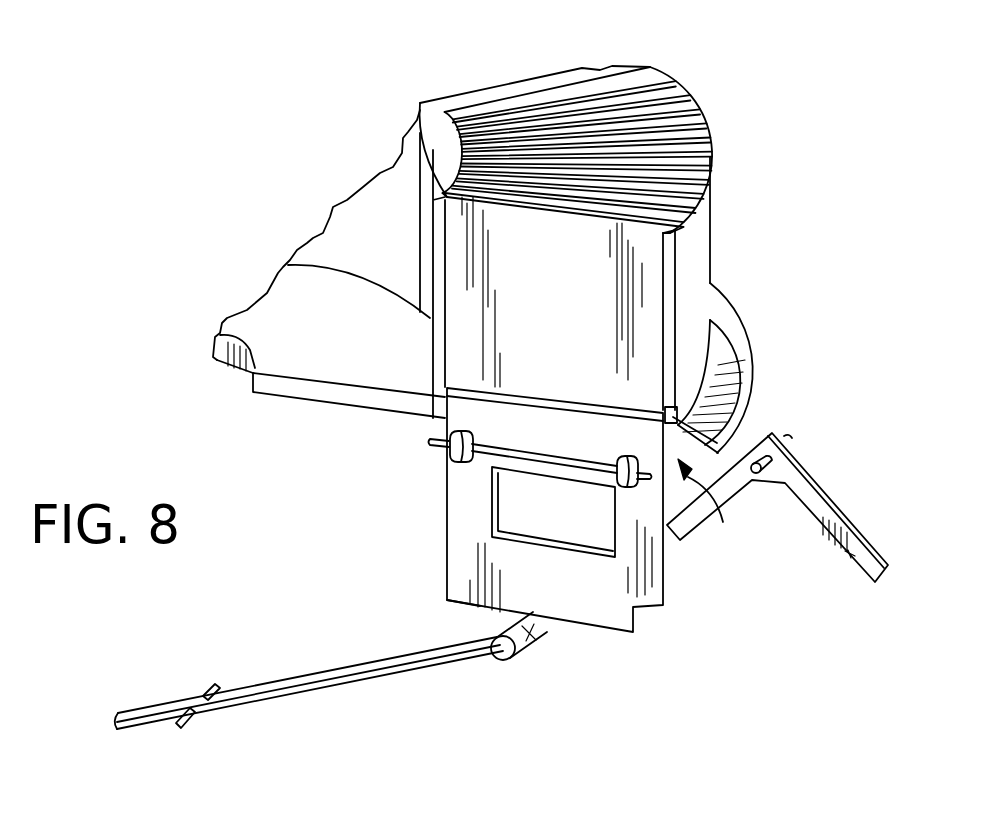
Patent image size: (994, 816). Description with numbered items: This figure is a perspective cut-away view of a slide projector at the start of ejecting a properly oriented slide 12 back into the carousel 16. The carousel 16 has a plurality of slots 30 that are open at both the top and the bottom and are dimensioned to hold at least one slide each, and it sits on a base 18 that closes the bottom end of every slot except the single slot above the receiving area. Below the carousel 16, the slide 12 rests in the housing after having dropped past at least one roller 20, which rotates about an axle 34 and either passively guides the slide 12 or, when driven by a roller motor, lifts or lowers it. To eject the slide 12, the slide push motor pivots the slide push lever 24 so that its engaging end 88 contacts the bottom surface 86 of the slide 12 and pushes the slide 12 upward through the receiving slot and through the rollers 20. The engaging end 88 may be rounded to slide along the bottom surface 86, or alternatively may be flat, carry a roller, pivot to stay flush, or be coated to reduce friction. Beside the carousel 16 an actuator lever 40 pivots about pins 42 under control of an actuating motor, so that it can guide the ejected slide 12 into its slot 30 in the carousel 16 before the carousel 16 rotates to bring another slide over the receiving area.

The slide 12 is at (583, 582).
The carousel 16 is at (683, 88).
The base 18 is at (735, 358).
The roller 20 is at (452, 463).
The slide push lever 24 is at (383, 670).
The slots 30 is at (708, 506).
The axles 34 is at (432, 440).
The actuator lever 40 is at (856, 551).
The pins 42 is at (774, 466).
The bottom surface 86 is at (477, 615).
The engaging end 88 is at (531, 633).